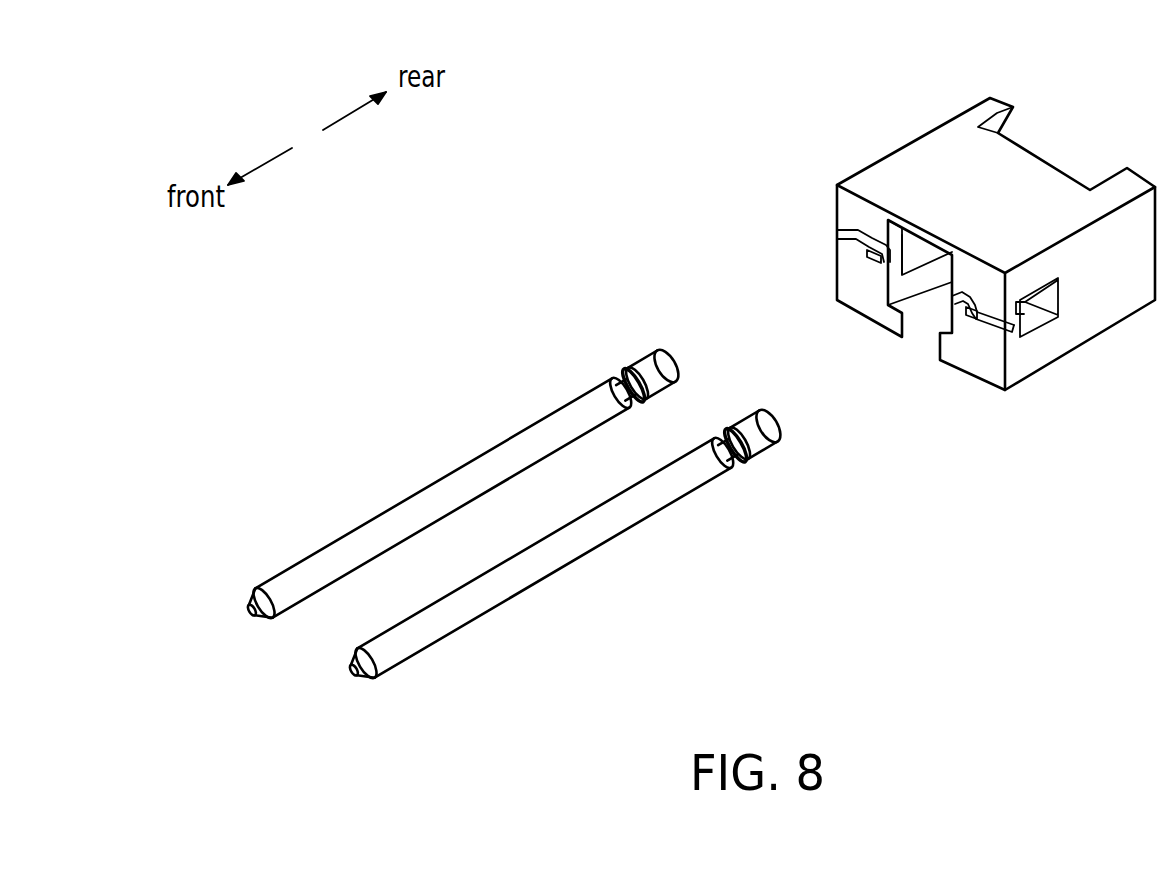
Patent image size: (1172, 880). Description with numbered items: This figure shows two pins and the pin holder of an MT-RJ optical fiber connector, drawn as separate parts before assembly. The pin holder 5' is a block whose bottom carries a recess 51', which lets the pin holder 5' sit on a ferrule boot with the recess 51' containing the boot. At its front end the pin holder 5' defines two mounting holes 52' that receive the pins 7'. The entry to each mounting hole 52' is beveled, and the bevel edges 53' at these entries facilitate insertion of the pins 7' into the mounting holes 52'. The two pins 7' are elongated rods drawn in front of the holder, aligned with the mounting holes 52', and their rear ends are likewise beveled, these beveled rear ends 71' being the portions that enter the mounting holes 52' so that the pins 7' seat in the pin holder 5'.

The pin holder 5' is at (996, 209).
The recess 51' is at (906, 340).
The mounting holes 52' is at (873, 358).
The bevel edges 53' is at (969, 354).
The pins 7' is at (522, 463).
The beveled rear ends 71' is at (702, 355).